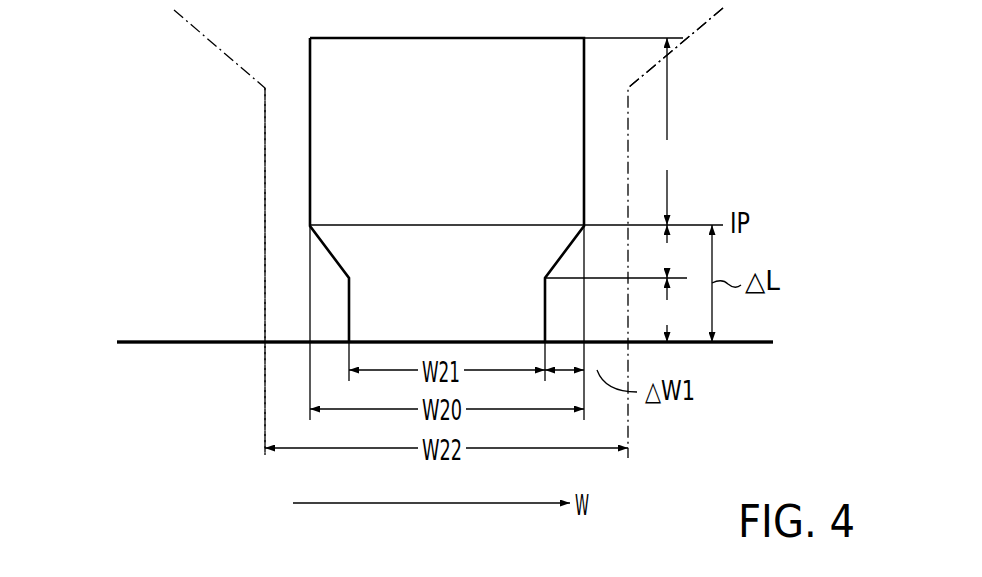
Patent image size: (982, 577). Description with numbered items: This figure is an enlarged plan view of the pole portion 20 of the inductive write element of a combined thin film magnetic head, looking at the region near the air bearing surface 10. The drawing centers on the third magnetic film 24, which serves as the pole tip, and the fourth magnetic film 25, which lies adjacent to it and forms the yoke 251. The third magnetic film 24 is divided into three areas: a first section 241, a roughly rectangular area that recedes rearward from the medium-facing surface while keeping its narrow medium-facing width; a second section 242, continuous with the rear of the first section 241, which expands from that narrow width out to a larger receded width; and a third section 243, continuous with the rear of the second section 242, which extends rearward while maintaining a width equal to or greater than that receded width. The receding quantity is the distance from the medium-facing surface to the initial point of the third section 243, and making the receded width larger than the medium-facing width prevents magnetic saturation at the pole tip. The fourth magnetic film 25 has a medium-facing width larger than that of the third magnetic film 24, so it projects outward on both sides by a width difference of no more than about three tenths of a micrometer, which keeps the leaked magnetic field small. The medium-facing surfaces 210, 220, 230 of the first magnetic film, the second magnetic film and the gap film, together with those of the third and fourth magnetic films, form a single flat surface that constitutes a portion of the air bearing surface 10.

The air bearing surface 10 is at (698, 348).
The pole portion 20 is at (263, 158).
The third magnetic film 24 is at (355, 309).
The fourth magnetic film 25 is at (265, 221).
The surface facing opposite the medium 210 is at (160, 342).
The surface facing opposite the medium 220 is at (245, 342).
The surface facing opposite the medium 230 is at (445, 384).
The first section 241 is at (670, 310).
The second section 242 is at (665, 251).
The third section 243 is at (670, 131).
The yoke 251 is at (706, 18).